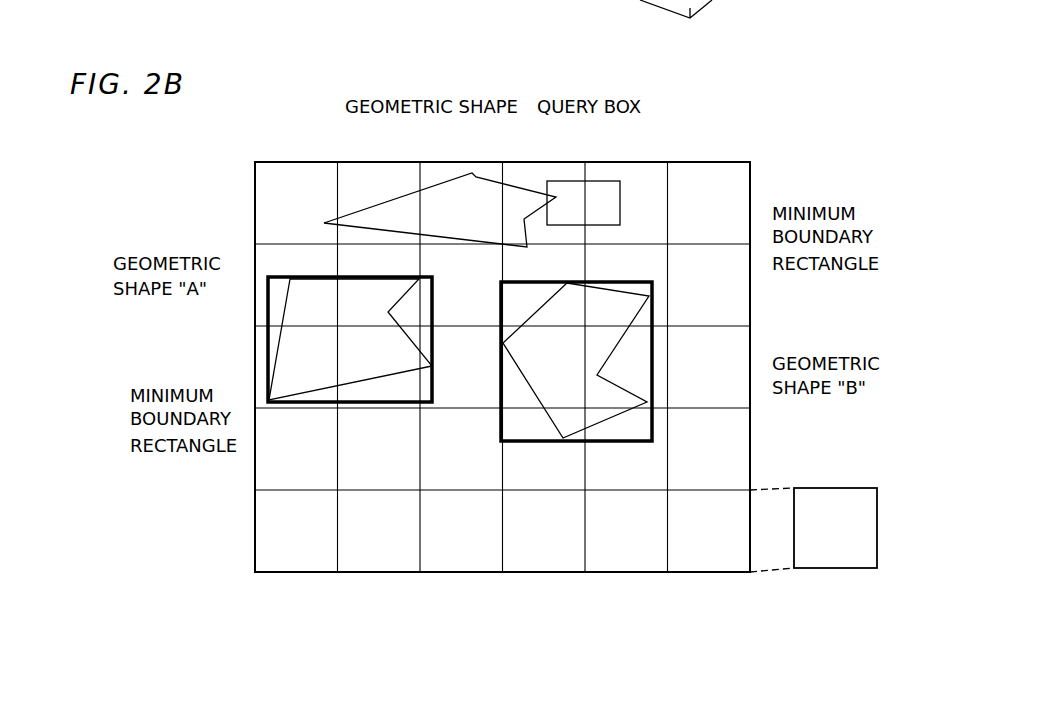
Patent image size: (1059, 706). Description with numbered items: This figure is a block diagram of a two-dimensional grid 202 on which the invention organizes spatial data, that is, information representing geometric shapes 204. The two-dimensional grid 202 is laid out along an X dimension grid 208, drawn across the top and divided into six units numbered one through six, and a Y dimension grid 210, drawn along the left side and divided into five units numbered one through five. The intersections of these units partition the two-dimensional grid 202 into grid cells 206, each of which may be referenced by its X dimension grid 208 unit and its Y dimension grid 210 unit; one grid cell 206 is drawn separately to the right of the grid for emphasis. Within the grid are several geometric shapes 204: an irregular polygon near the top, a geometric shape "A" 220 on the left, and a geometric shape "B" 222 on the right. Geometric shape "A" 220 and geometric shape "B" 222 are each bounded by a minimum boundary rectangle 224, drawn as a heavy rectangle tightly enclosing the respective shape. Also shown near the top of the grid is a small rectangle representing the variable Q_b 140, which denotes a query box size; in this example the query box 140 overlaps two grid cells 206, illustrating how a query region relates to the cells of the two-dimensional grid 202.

The query box 140 is at (603, 181).
The two-dimensional grid 202 is at (103, 572).
The geometric shape 204 is at (443, 184).
The grid cell 206 is at (834, 488).
The X dimension grid 208 is at (376, 70).
The Y dimension grid 210 is at (66, 280).
The geometric shape "A" 220 is at (268, 300).
The geometric shape "B" 222 is at (613, 352).
The minimum boundary rectangle 224 is at (268, 343).